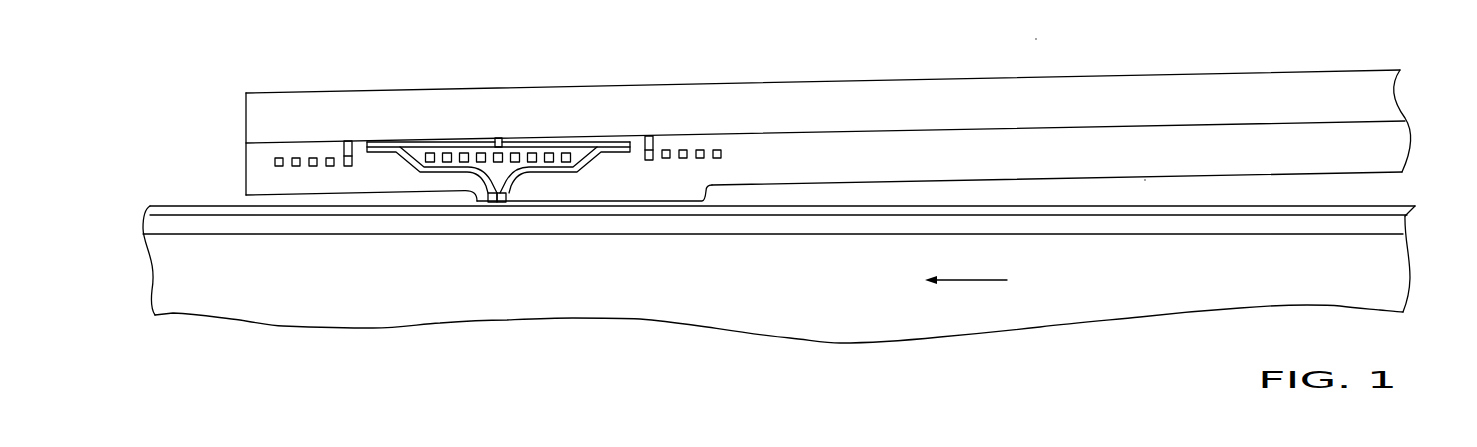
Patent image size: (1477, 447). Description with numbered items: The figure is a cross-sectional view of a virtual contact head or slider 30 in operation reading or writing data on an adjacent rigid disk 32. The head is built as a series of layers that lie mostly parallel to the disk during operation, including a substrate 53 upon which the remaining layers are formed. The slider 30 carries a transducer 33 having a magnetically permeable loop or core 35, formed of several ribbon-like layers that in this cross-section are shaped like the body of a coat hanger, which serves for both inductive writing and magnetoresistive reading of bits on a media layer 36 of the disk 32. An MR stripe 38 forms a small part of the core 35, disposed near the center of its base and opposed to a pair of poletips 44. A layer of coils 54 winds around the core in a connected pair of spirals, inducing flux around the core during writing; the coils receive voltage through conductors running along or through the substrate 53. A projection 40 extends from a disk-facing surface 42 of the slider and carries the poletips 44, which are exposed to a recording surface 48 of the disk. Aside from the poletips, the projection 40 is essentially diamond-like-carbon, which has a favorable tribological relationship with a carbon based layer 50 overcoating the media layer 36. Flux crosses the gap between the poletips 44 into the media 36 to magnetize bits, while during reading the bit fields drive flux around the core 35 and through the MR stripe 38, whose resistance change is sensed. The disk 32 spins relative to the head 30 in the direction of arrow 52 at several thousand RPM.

The slider 30 is at (1042, 34).
The rigid disk 32 is at (175, 197).
The transducer 33 is at (646, 117).
The magnetically permeable loop or core 35 is at (573, 140).
The media layer 36 is at (1405, 227).
The MR stripe 38 is at (500, 129).
The projection 40 is at (722, 197).
The disk-facing surface 42 is at (1145, 187).
The poletips 44 is at (493, 204).
The recording surface 48 is at (1233, 197).
The carbon based layer 50 is at (1404, 212).
The arrow 52 is at (973, 282).
The substrate 53 is at (930, 93).
The layer of coils 54 is at (277, 157).